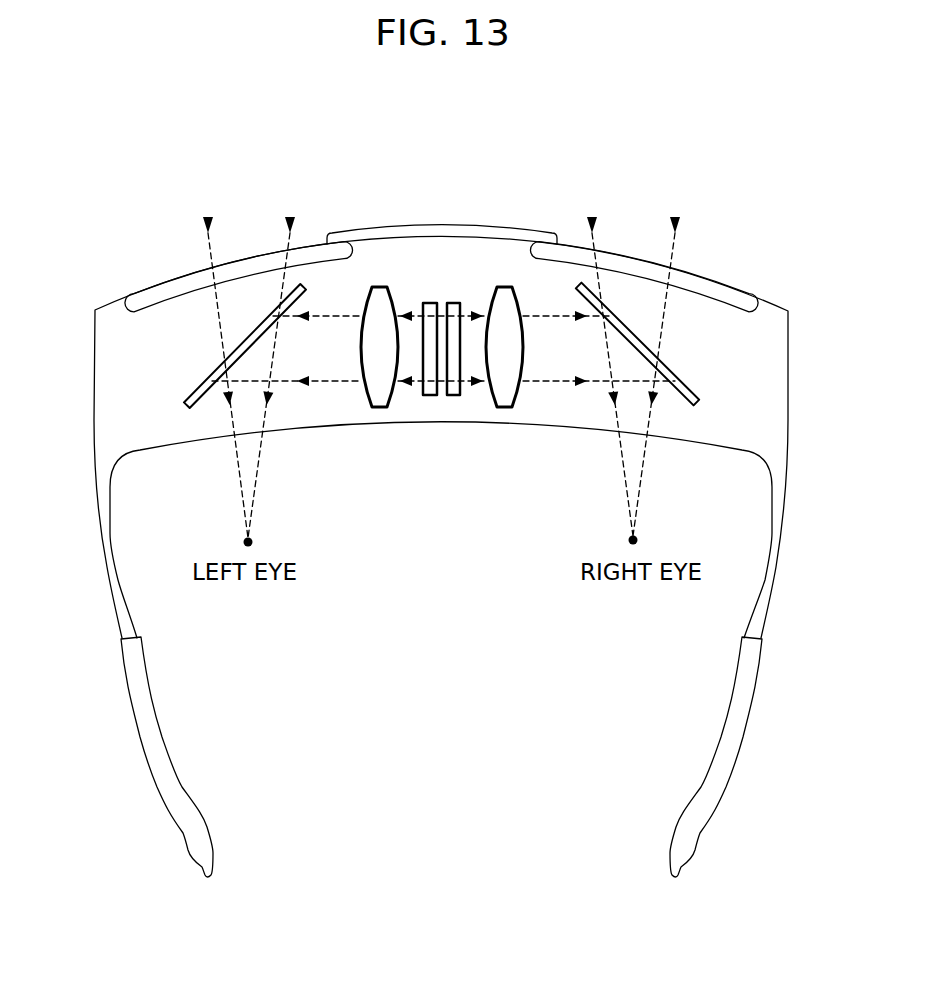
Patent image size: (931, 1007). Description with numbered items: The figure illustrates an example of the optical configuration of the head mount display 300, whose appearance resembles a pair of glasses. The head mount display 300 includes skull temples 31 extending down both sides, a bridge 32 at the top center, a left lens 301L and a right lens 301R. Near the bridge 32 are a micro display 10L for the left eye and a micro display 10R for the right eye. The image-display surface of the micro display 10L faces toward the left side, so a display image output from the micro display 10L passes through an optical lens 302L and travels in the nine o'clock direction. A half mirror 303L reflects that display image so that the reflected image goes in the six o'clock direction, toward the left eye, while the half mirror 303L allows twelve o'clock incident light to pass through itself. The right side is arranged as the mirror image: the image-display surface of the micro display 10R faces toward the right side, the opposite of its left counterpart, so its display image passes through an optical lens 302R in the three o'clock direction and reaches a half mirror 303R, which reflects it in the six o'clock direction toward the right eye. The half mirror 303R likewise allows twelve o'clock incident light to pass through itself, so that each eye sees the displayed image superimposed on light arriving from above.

The head mount display 300 is at (150, 204).
The bridge 32 is at (393, 232).
The left lens 301L is at (180, 285).
The right lens 301R is at (700, 285).
The half mirror 303L is at (213, 400).
The half mirror 303R is at (670, 405).
The optical lens 302L is at (367, 395).
The optical lens 302R is at (516, 395).
The micro display 10L is at (427, 397).
The micro display 10R is at (456, 397).
The skull temples 31 is at (120, 575).